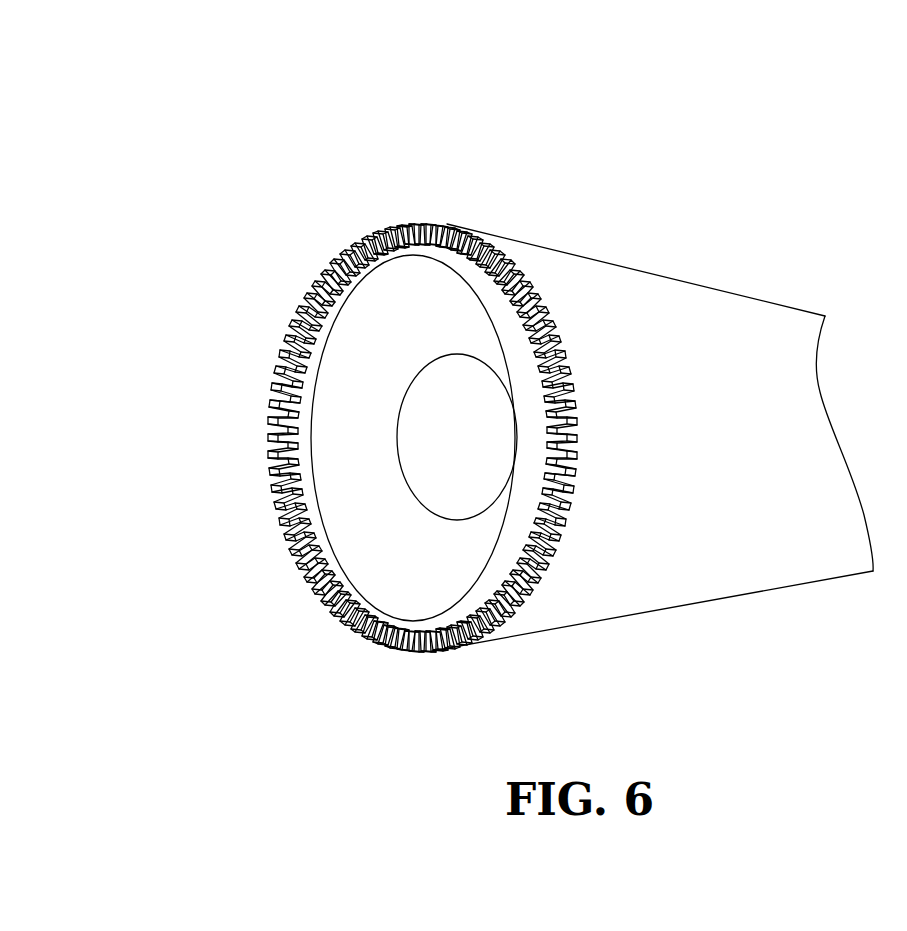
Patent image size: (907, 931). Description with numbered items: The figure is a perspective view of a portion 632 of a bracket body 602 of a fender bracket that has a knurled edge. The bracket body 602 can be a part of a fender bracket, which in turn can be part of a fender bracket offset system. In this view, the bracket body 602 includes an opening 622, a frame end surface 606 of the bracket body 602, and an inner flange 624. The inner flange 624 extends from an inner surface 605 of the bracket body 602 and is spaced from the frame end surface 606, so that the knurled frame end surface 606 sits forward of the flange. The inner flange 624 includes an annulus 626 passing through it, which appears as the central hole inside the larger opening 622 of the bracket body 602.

The portion 632 is at (236, 116).
The bracket body 602 is at (703, 313).
The frame end surface 606 is at (270, 426).
The inner surface 605 is at (337, 565).
The inner flange 624 is at (458, 562).
The annulus 626 is at (407, 355).
The opening 622 is at (567, 275).